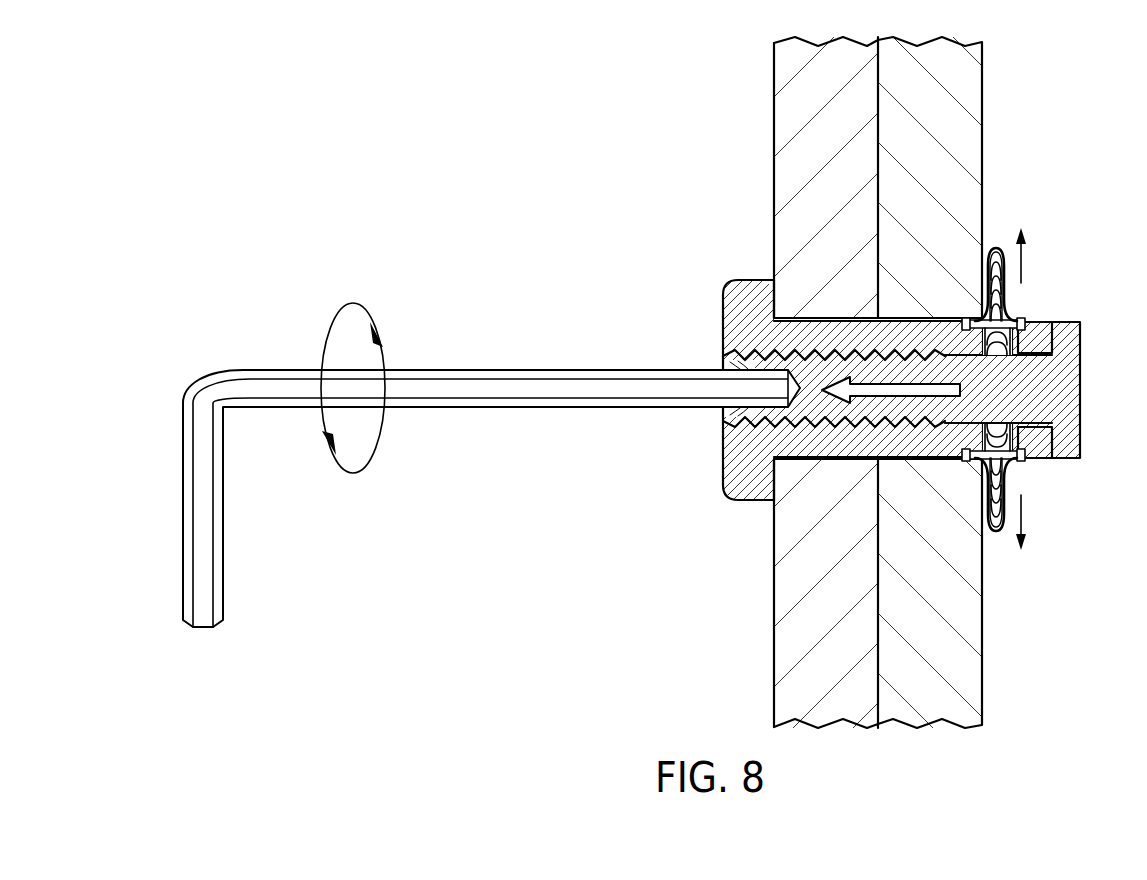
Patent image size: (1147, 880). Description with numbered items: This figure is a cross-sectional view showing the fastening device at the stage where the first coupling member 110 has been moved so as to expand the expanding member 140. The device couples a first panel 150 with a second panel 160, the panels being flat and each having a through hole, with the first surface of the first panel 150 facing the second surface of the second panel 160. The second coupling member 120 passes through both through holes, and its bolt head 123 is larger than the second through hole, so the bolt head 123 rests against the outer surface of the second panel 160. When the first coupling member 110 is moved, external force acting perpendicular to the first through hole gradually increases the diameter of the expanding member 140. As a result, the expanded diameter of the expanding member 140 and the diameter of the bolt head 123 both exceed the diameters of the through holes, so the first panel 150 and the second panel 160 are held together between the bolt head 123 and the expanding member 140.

The first coupling member 110 is at (1060, 385).
The second coupling member 120 is at (823, 458).
The bolt head 123 is at (735, 313).
The expanding member 140 is at (998, 246).
The first panel 150 is at (963, 137).
The second panel 160 is at (793, 135).